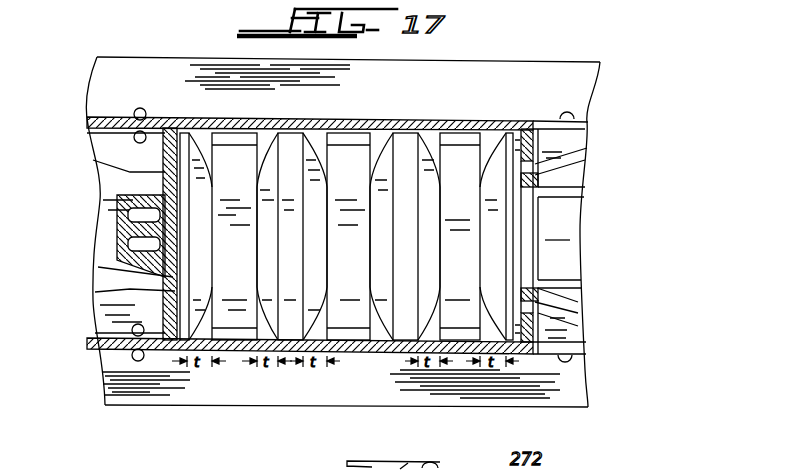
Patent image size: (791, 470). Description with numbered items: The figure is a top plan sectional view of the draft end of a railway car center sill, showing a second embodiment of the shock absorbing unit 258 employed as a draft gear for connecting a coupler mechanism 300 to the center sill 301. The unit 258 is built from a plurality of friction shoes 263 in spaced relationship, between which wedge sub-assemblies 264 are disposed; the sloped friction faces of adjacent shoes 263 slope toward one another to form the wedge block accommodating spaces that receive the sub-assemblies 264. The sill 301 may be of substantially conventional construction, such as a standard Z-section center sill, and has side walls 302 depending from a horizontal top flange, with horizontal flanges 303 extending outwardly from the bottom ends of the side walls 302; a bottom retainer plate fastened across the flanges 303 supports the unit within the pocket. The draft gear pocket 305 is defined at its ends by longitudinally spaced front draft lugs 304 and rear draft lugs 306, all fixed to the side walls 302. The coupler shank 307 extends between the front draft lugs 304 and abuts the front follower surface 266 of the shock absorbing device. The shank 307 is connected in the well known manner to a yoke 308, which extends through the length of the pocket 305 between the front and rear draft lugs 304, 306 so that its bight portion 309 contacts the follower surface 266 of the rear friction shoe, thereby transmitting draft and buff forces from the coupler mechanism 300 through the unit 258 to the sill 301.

The shock absorbing unit 258 is at (366, 126).
The friction shoes 263 is at (190, 130).
The wedge sub-assemblies 264 is at (245, 131).
The follower surfaces 266 is at (98, 267).
The coupler mechanism 300 is at (92, 279).
The center sill 301 is at (598, 383).
The side walls 302 is at (442, 124).
The horizontal flanges 303 is at (155, 78).
The front draft lugs 304 is at (562, 144).
The draft gear pocket 305 is at (316, 334).
The rear draft lugs 306 is at (108, 153).
The coupler shank 307 is at (563, 251).
The yoke 308 is at (565, 181).
The bight portion 309 is at (117, 226).